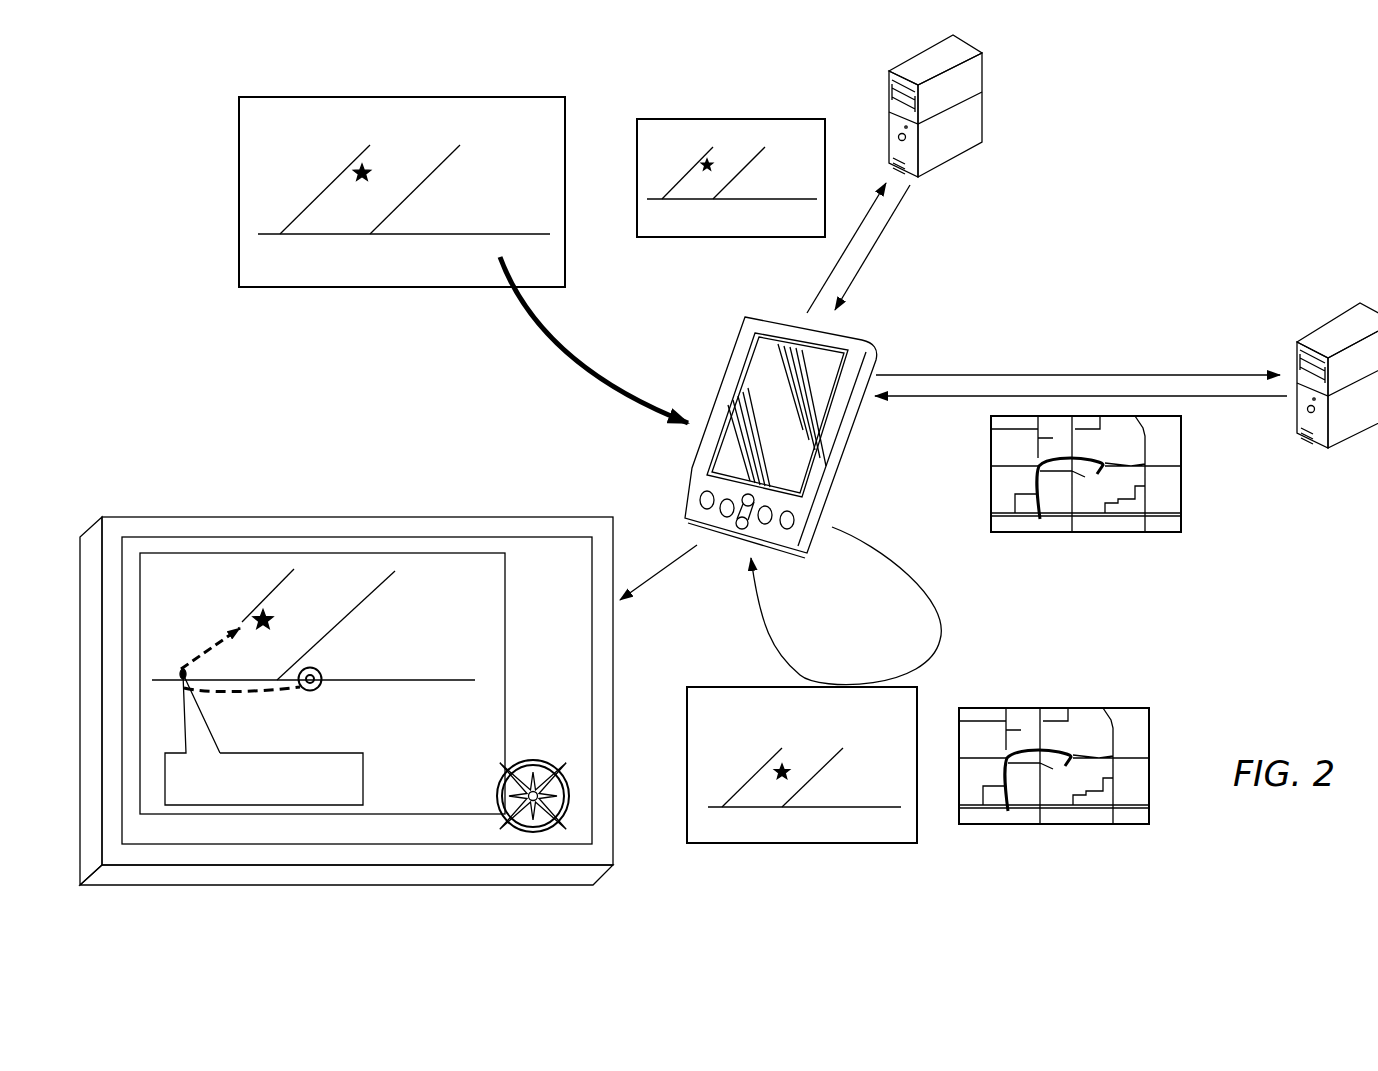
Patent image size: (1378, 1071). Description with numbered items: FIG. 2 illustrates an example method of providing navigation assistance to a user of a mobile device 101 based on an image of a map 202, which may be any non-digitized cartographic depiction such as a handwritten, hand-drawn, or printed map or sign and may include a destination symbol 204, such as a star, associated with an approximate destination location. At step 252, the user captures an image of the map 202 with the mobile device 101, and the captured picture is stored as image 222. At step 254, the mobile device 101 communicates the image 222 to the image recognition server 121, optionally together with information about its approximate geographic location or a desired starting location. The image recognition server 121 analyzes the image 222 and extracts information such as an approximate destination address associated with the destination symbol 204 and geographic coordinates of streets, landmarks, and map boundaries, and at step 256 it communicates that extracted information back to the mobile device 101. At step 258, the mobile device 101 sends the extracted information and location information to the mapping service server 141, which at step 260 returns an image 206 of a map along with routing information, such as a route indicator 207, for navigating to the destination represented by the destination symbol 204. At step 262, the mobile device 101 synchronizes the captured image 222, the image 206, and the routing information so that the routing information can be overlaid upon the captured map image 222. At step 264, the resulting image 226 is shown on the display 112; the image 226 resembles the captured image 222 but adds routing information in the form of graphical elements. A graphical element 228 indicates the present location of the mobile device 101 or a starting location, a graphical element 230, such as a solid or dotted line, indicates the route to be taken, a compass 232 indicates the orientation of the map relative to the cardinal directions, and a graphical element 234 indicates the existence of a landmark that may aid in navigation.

The mobile device 101 is at (727, 370).
The display 112 is at (535, 578).
The image recognition server 121 is at (985, 98).
The mapping service server 141 is at (1342, 326).
The map 202 is at (380, 95).
The destination symbol 204 is at (357, 180).
The image 206 is at (1181, 483).
The route indicator 207 is at (991, 487).
The image 222 is at (730, 119).
The image 226 is at (450, 762).
The graphical element 228 is at (322, 671).
The graphical element 230 is at (225, 692).
The compass 232 is at (535, 760).
The graphical element 234 is at (363, 778).
The step 252 is at (568, 358).
The step 254 is at (830, 272).
The step 256 is at (897, 212).
The step 258 is at (1228, 372).
The step 260 is at (930, 397).
The step 262 is at (770, 630).
The step 264 is at (665, 572).